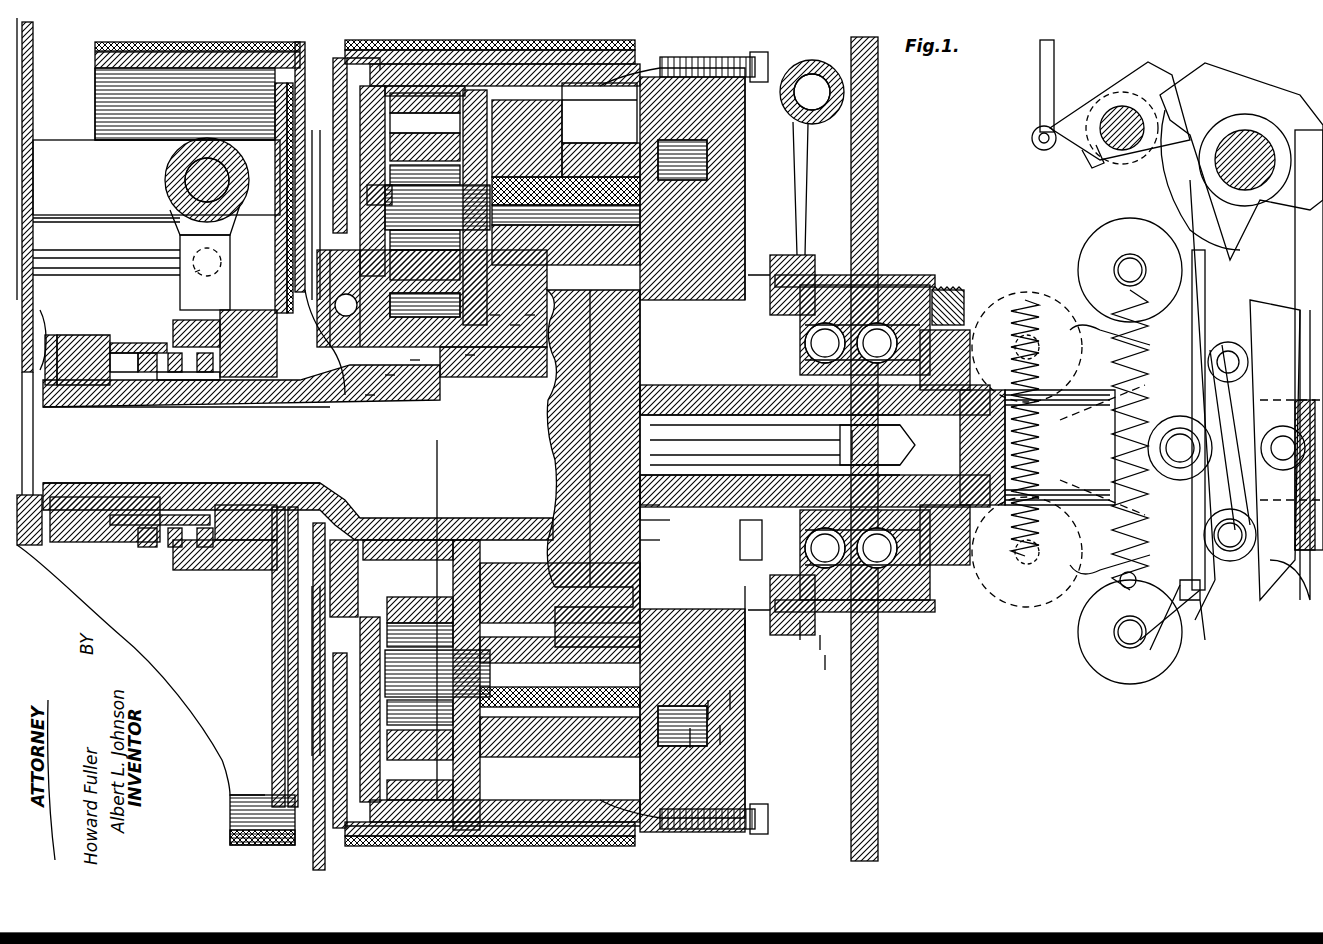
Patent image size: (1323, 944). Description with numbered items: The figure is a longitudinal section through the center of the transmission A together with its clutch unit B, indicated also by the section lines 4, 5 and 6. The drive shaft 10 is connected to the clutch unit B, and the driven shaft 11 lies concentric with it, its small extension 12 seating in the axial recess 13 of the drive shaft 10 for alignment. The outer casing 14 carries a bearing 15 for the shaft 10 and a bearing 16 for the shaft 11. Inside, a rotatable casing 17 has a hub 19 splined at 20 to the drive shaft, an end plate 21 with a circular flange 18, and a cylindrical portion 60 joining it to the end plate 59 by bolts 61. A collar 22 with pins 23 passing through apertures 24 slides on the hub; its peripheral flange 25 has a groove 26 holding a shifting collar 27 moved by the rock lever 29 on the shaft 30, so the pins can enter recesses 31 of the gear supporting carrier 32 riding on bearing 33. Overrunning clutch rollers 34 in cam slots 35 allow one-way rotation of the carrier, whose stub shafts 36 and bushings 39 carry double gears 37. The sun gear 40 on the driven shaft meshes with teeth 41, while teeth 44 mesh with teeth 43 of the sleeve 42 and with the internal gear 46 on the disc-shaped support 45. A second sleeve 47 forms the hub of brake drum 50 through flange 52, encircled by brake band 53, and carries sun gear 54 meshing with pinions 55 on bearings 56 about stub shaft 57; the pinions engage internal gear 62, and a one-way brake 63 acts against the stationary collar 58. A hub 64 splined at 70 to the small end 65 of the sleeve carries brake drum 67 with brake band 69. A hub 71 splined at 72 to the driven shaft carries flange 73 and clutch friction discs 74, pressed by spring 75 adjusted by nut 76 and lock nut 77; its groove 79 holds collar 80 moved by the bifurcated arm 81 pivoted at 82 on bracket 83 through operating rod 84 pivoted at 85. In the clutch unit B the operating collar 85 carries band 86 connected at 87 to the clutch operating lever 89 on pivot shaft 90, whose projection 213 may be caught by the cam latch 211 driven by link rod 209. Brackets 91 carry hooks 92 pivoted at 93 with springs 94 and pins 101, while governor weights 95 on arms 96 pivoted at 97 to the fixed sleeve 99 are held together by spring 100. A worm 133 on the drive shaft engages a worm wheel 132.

The drive shaft 10 is at (1037, 447).
The driven shaft 11 is at (186, 445).
The extension 12 is at (718, 440).
The axial recess 13 is at (877, 445).
The outer casing 14 is at (33, 85).
The bearing 15 is at (880, 328).
The bearing 16 is at (40, 400).
The rotatable casing 17 is at (730, 735).
The circular flange 18 is at (640, 788).
The hub 19 is at (632, 385).
The spline 20 is at (640, 500).
The end plate 21 is at (740, 700).
The collar 22 is at (770, 258).
The pins 23 is at (760, 625).
The apertures 24 is at (755, 543).
The circular peripheral flange 25 is at (800, 628).
The groove 26 is at (830, 660).
The shifting collar 27 is at (825, 640).
The rock lever 29 is at (796, 170).
The shaft 30 is at (790, 115).
The recesses 31 is at (650, 525).
The gear supporting carrier 32 is at (745, 202).
The bearing 33 is at (650, 512).
The overrunning clutch rollers 34 is at (700, 735).
The cam slots 35 is at (720, 710).
The stub shafts 36 is at (635, 542).
The double gears 37 is at (495, 320).
The bushings 39 is at (530, 320).
The gear 40 is at (593, 468).
The gear teeth 41 is at (585, 380).
The sleeve 42 is at (415, 365).
The gear teeth 43 is at (515, 330).
The teeth 44 is at (470, 360).
The disc-shaped support 45 is at (480, 320).
The internal gear 46 is at (300, 100).
The second sleeve 47 is at (390, 380).
The brake drum 50 is at (395, 64).
The disc-shaped flange 52 is at (333, 80).
The brake band 53 is at (580, 50).
The gear 54 is at (368, 400).
The pinions 55 is at (380, 90).
The bearings 56 is at (430, 248).
The stub shaft 57 is at (367, 196).
The stationary collar 58 is at (313, 855).
The end plate 59 is at (365, 185).
The cylindrical portion 60 is at (480, 120).
The bolts 61 is at (768, 820).
The internal gear 62 is at (420, 828).
The one-way brake 63 is at (340, 395).
The hub 64 is at (310, 393).
The small diameter end 65 is at (280, 395).
The brake drum 67 is at (222, 52).
The brake band 69 is at (162, 42).
The spline 70 is at (338, 398).
The hub 71 is at (230, 385).
The spline connection 72 is at (167, 375).
The circular flange 73 is at (270, 245).
The clutch friction discs 74 is at (316, 140).
The spring 75 is at (143, 375).
The nut 76 is at (110, 383).
The lock nut 77 is at (80, 385).
The groove 79 is at (185, 375).
The collar 80 is at (210, 580).
The bifurcated operating arm 81 is at (195, 275).
The pivot 82 is at (170, 182).
The bracket 83 is at (52, 150).
The operating rod 84 is at (75, 255).
The pivot / operating collar 85 is at (190, 296).
The band 86 is at (1295, 560).
The connection 87 is at (1283, 436).
The clutch operating lever 89 is at (1190, 255).
The pivot shaft 90 is at (1242, 130).
The brackets 91 is at (1190, 610).
The hooks 92 is at (1075, 600).
The pivots 93 is at (1248, 560).
The springs 94 is at (1210, 530).
The governor weights 95 is at (1085, 655).
The arms 96 is at (1192, 620).
The pivots 97 is at (1180, 428).
The fixed sleeve 99 is at (1200, 280).
The spring 100 is at (1080, 630).
The pins 101 is at (1150, 602).
The worm wheel 132 is at (972, 320).
The worm 133 is at (940, 290).
The link rod 209 is at (1054, 60).
The cam latch 211 is at (1130, 80).
The projection 213 is at (1197, 75).
The transmission A is at (730, 57).
The clutch unit B is at (1276, 602).
The section line 4 is at (603, 300).
The section line 5 is at (542, 100).
The section line 6 is at (365, 213).